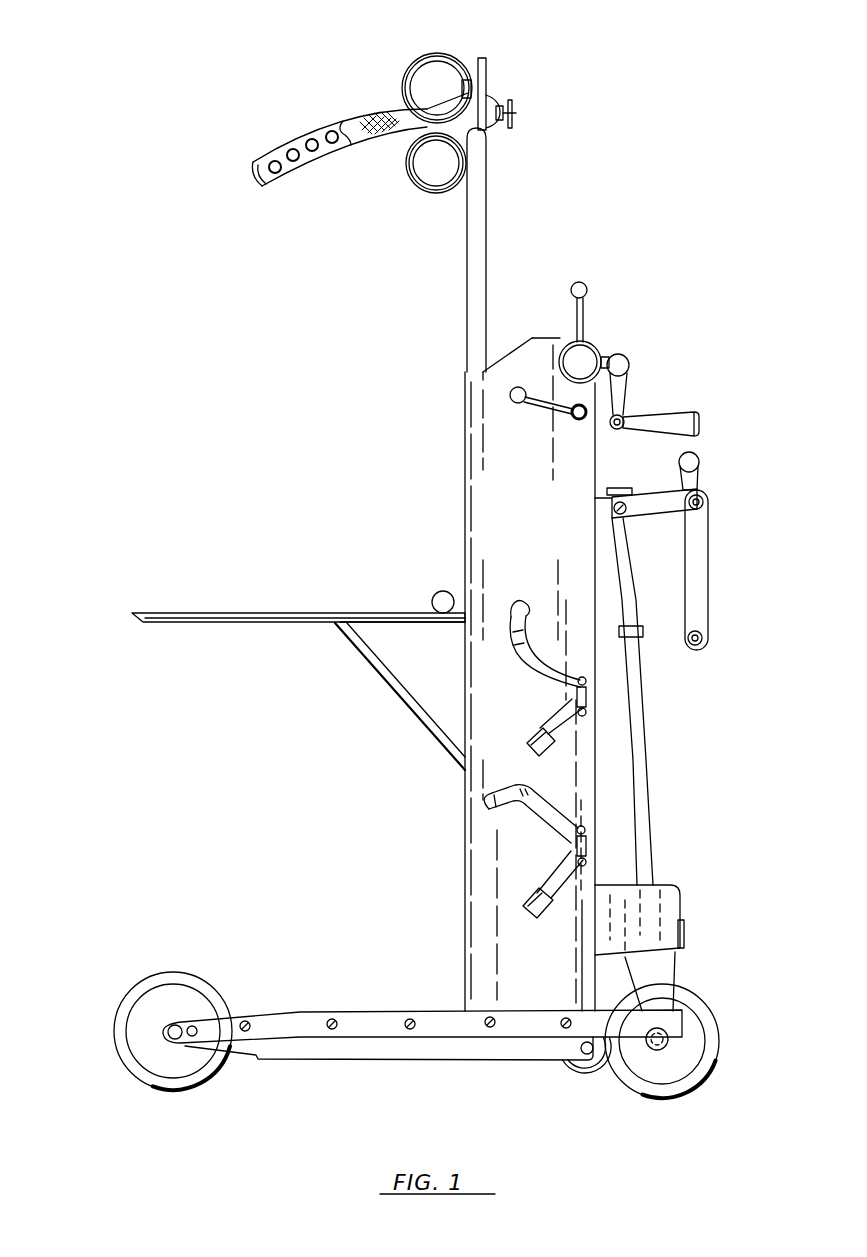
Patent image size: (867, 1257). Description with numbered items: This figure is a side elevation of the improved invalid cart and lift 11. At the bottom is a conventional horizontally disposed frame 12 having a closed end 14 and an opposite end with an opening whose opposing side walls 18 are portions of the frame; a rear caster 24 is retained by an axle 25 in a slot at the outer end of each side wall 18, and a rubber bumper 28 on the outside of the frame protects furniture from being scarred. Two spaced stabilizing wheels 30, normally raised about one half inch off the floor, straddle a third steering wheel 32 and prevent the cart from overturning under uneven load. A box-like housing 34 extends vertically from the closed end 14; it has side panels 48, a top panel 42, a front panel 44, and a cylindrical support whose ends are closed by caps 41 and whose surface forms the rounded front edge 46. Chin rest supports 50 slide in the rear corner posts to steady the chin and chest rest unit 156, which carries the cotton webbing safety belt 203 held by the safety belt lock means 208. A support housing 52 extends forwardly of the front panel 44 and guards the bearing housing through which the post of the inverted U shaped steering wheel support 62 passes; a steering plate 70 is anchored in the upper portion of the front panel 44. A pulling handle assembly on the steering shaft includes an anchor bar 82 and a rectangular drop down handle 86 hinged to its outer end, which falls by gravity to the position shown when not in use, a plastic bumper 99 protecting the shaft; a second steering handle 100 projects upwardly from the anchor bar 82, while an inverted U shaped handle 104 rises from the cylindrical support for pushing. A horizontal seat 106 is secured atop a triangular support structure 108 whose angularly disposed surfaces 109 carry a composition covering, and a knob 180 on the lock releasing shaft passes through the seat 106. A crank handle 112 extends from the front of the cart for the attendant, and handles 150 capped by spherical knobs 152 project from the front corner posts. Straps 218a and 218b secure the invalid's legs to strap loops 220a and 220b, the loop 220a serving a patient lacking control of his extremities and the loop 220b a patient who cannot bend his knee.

The cart and lift 11 is at (363, 478).
The frame 12 is at (287, 1008).
The closed end 14 is at (663, 1022).
The side walls 18 is at (350, 1060).
The rear caster 24 is at (173, 1068).
The axle 25 is at (165, 1030).
The rubber bumper 28 is at (437, 1012).
The stabilizing wheels 30 is at (583, 1077).
The steering wheel 32 is at (707, 1062).
The housing 34 is at (458, 823).
The caps 41 is at (583, 356).
The top panel 42 is at (525, 337).
The front panel 44 is at (600, 760).
The front edge 46 is at (603, 352).
The side panels 48 is at (528, 520).
The chin rest supports 50 is at (467, 260).
The support housing 52 is at (647, 903).
The steering wheel support 62 is at (658, 972).
The steering plate 70 is at (604, 488).
The anchor bar 82 is at (668, 488).
The drop down handle 86 is at (708, 603).
The plastic bumper 99 is at (647, 627).
The second steering handle 100 is at (700, 472).
The handle 104 is at (580, 282).
The seat 106 is at (218, 612).
The support structure 108 is at (441, 662).
The angularly disposed surfaces 109 is at (387, 687).
The crank handle 112 is at (688, 410).
The handles 150 is at (570, 413).
The spherical knobs 152 is at (512, 404).
The chin and chest rest unit 156 is at (462, 48).
The knob 180 is at (442, 591).
The safety belt 203 is at (358, 112).
The safety belt lock means 208 is at (540, 125).
The strap 218a is at (482, 800).
The strap 218b is at (540, 586).
The strap loop 220a is at (585, 840).
The strap loop 220b is at (588, 700).